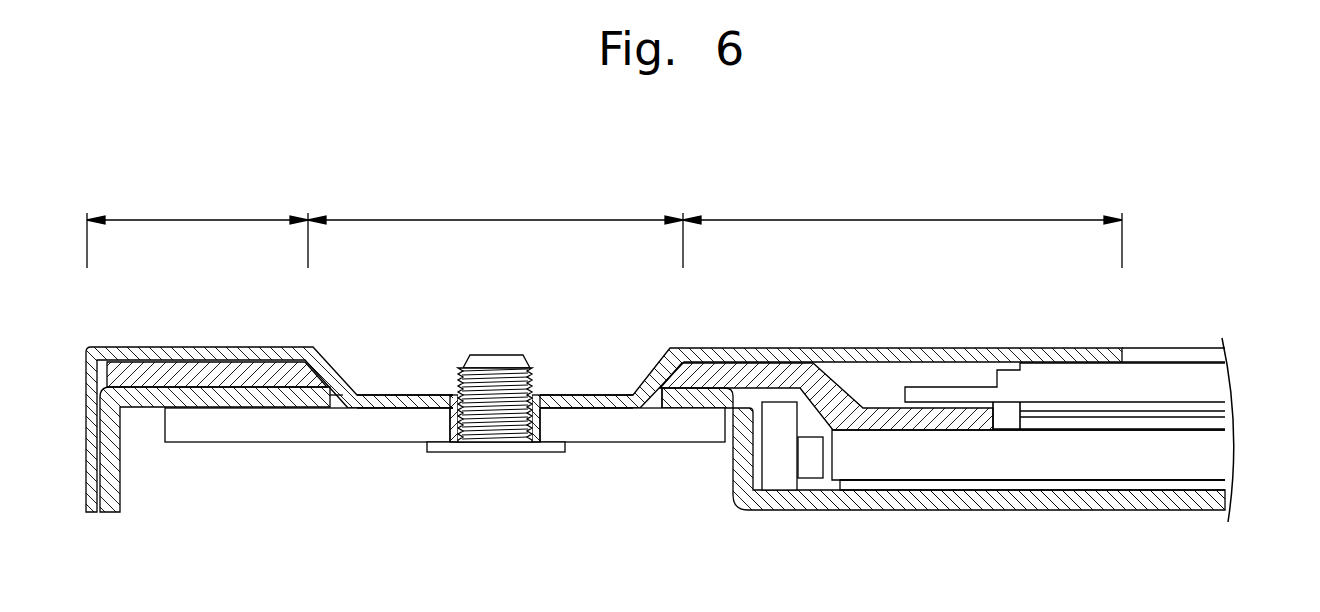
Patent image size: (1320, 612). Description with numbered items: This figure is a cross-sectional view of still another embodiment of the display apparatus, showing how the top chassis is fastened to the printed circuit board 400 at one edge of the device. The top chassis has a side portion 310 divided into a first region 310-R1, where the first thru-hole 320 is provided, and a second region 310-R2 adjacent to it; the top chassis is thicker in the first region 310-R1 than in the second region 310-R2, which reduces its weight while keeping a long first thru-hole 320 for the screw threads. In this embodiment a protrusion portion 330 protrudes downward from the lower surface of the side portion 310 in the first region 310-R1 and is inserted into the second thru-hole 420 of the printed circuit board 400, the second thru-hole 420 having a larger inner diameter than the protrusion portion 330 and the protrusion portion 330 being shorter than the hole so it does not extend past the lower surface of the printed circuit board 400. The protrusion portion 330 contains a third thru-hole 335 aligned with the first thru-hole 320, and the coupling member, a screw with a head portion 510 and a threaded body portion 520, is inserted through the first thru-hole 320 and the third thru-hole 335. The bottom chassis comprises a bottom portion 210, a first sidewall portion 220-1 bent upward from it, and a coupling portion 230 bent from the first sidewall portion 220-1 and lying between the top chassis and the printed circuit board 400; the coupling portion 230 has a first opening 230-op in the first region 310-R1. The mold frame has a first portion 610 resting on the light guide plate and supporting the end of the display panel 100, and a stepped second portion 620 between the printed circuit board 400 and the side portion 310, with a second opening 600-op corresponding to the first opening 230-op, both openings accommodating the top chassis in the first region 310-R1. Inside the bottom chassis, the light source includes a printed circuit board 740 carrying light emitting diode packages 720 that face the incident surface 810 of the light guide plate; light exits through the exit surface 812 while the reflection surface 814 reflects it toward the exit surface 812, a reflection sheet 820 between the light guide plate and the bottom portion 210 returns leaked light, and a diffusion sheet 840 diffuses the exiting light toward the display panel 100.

The side portion 310 is at (177, 347).
The first region 310-R1 is at (495, 230).
The second region 310-R2 is at (604, 230).
The second portion 620 is at (265, 368).
The coupling portion 230 is at (142, 408).
The first opening 230-op is at (362, 410).
The printed circuit board 400 is at (253, 430).
The first thru-hole 320 is at (453, 403).
The protrusion portion 330 is at (540, 427).
The body portion 520 is at (505, 360).
The third thru-hole 335 is at (448, 425).
The second thru-hole 420 is at (520, 437).
The head portion 510 is at (487, 450).
The second opening 600-op is at (653, 367).
The first portion 610 is at (873, 412).
The display panel 100 is at (958, 384).
The diffusion sheet 840 is at (1217, 425).
The exit surface 812 is at (1187, 430).
The reflection surface 814 is at (1187, 477).
The incident surface 810 is at (832, 458).
The reflection sheet 820 is at (957, 485).
The printed circuit board for the light source 740 is at (778, 480).
The light emitting diode packages 720 is at (812, 470).
The first sidewall portion 220-1 is at (732, 475).
The bottom portion 210 is at (1032, 505).